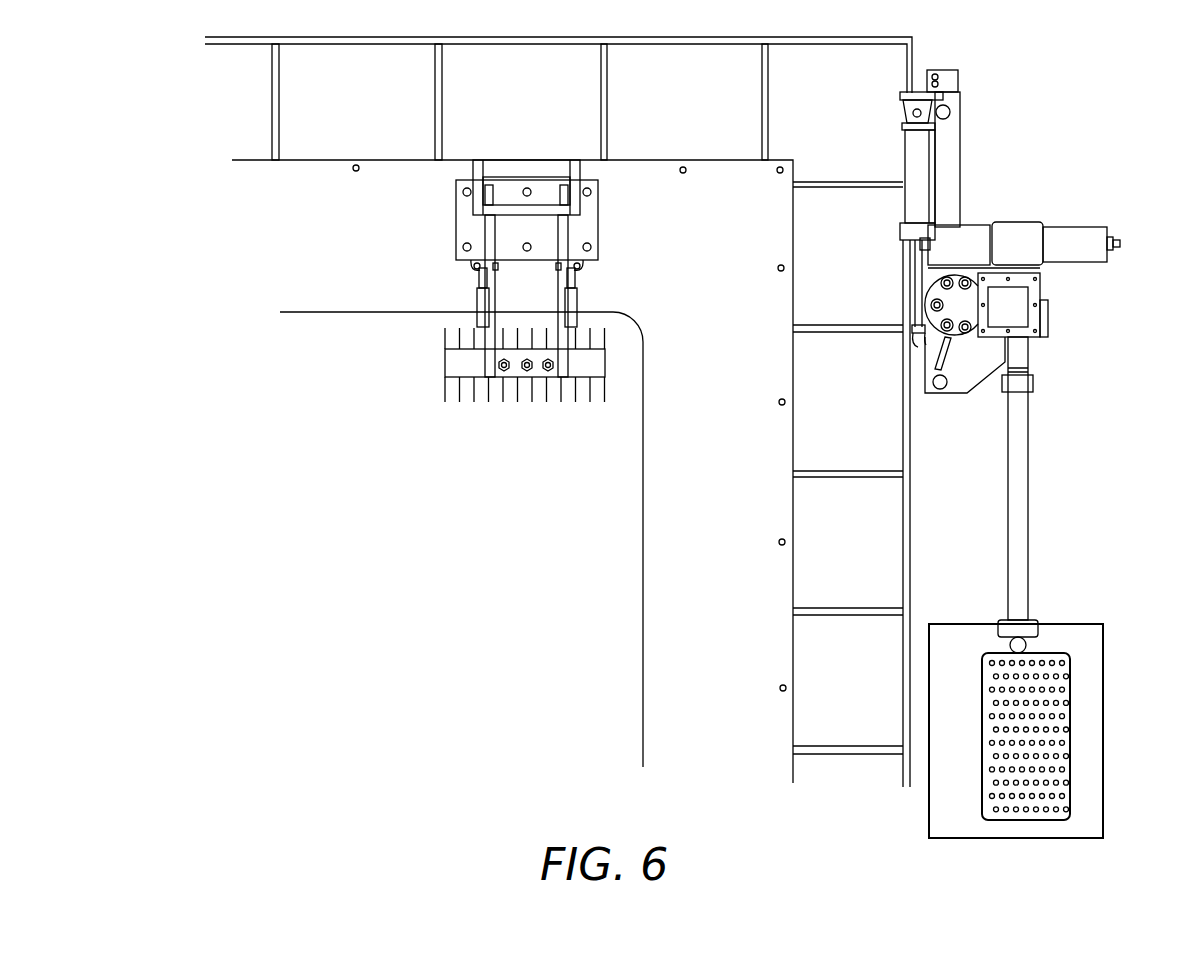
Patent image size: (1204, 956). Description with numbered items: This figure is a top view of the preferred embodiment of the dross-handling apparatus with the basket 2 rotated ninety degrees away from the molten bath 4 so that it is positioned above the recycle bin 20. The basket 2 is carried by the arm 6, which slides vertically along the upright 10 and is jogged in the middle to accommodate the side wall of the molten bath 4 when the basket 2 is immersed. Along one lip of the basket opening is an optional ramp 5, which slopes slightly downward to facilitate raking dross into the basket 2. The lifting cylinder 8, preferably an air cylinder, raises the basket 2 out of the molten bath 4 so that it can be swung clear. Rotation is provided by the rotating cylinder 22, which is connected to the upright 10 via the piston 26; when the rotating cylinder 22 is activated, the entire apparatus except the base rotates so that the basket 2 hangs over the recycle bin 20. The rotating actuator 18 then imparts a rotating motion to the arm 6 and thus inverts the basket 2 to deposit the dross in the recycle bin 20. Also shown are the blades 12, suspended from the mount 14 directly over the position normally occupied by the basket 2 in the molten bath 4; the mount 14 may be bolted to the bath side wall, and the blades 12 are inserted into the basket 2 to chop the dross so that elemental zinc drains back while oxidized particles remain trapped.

The basket 2 is at (1038, 748).
The molten bath 4 is at (479, 555).
The ramp 5 is at (1072, 682).
The arm 6 is at (1018, 463).
The lifting cylinder 8 is at (1015, 320).
The upright 10 is at (960, 295).
The blades 12 is at (445, 393).
The mount 14 is at (575, 274).
The rotating actuator 18 is at (1073, 238).
The recycle bin 20 is at (1097, 775).
The rotating cylinder 22 is at (912, 147).
The piston 26 is at (918, 292).